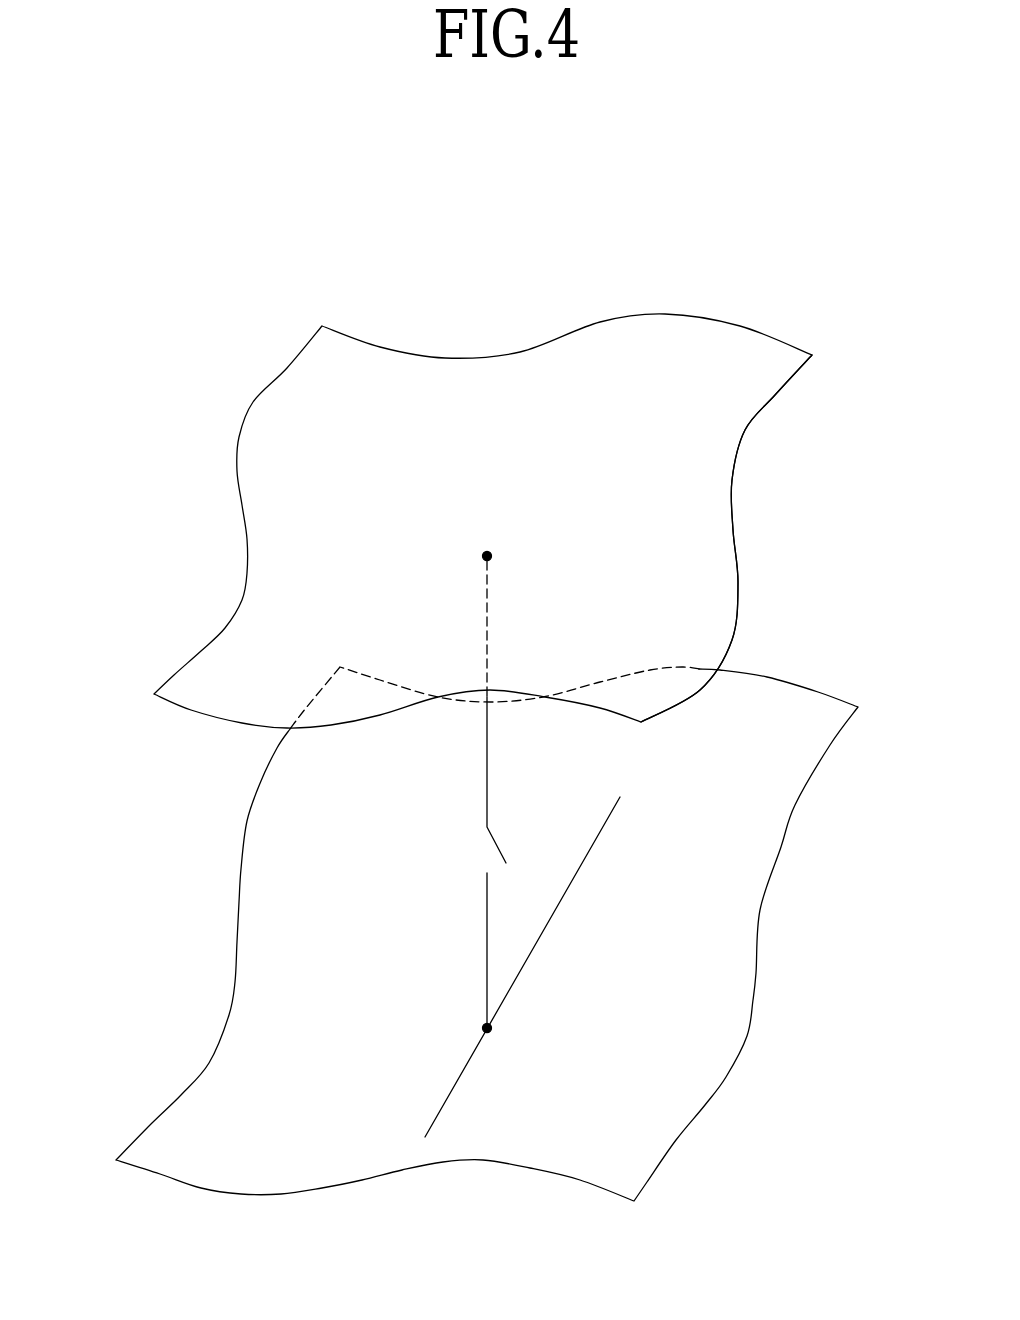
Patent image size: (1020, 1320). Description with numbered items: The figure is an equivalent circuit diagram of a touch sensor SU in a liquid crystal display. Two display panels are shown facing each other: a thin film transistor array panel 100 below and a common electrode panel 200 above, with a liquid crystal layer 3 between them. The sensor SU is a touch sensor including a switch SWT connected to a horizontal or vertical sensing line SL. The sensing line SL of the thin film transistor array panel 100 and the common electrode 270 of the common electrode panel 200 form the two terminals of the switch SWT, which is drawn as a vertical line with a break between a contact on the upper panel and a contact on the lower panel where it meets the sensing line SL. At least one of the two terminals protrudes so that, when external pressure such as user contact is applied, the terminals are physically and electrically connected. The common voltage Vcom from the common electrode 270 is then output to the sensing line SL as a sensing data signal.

The liquid crystal layer 3 is at (136, 815).
The thin film transistor array panel 100 is at (778, 910).
The common electrode panel 200 is at (757, 553).
The common electrode 270 is at (728, 493).
The sensor SU is at (500, 240).
The switch SWT is at (458, 792).
The sensing line SL is at (536, 949).